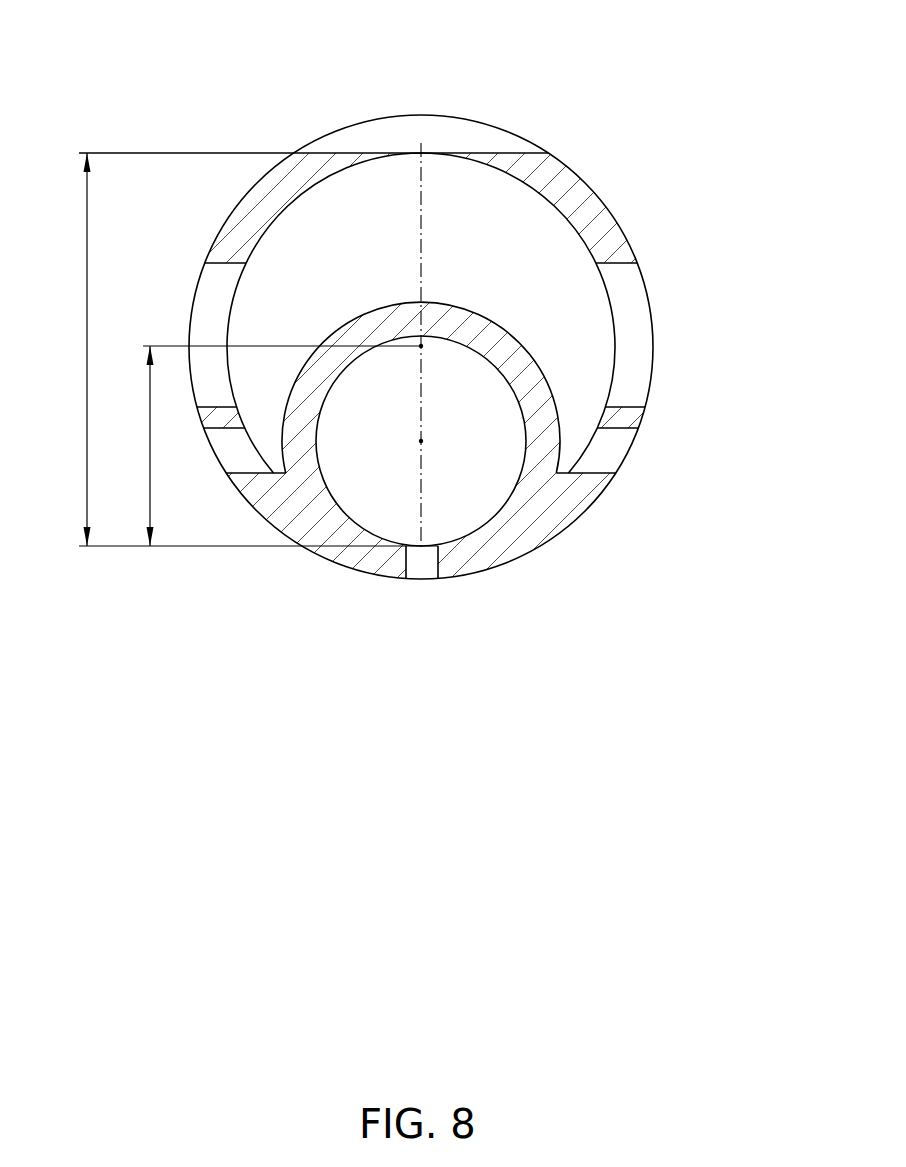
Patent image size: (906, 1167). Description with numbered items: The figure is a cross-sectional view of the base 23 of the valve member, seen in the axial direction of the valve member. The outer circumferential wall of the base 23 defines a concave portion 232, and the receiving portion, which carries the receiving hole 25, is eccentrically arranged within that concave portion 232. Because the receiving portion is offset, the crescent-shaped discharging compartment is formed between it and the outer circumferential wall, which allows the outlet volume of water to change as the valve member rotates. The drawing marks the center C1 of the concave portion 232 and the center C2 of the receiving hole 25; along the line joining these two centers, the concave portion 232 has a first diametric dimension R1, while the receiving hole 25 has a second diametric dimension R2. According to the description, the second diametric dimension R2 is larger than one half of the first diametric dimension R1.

The base 23 is at (605, 202).
The concave portion 232 is at (452, 165).
The receiving hole 25 is at (499, 426).
The center of the concave portion C1 is at (421, 346).
The center of the receiving hole C2 is at (421, 441).
The first diametric dimension R1 is at (70, 349).
The second diametric dimension R2 is at (258, 446).